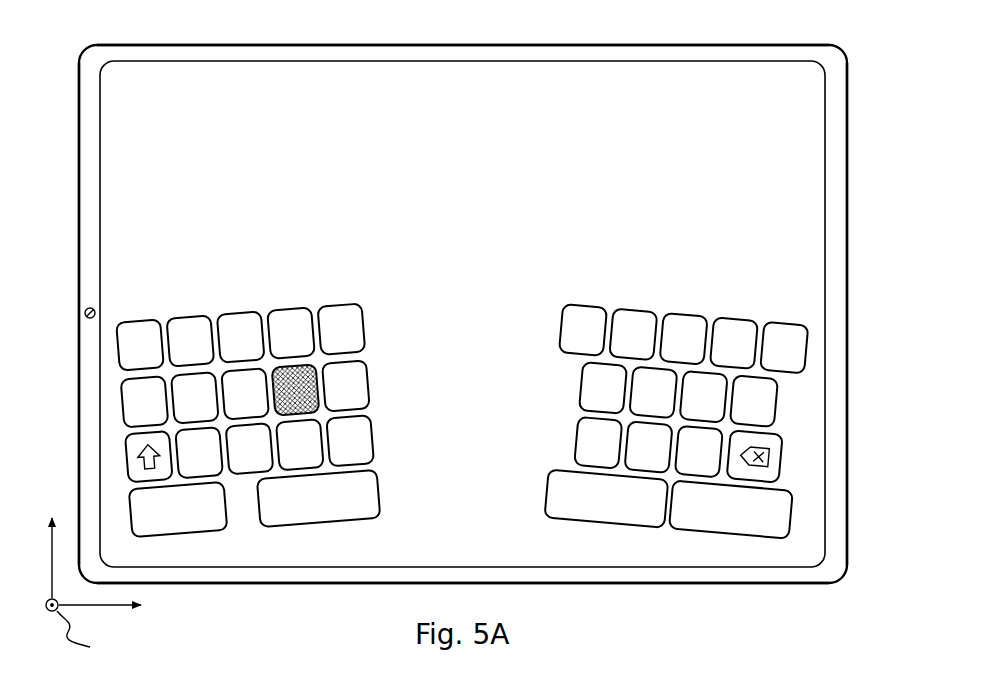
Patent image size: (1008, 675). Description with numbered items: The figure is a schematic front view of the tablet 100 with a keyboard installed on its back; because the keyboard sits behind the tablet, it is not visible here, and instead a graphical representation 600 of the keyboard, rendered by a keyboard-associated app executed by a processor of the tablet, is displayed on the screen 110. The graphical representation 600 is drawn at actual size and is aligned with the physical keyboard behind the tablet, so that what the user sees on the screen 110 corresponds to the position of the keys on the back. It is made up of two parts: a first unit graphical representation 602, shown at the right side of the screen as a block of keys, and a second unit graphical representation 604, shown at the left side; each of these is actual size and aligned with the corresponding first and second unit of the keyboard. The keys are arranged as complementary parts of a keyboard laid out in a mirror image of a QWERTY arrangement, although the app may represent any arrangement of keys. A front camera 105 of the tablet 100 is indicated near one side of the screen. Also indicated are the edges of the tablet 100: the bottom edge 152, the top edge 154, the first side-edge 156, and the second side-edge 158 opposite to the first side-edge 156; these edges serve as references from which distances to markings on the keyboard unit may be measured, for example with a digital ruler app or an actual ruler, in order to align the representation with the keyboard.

The tablet 100 is at (323, 613).
The front camera 105 is at (97, 308).
The screen 110 is at (668, 96).
The bottom edge 152 is at (562, 583).
The top edge 154 is at (257, 44).
The first side-edge 156 is at (847, 175).
The second side-edge 158 is at (79, 197).
The graphical representation 600 is at (524, 317).
The first unit graphical representation 602 is at (708, 292).
The second unit graphical representation 604 is at (233, 293).